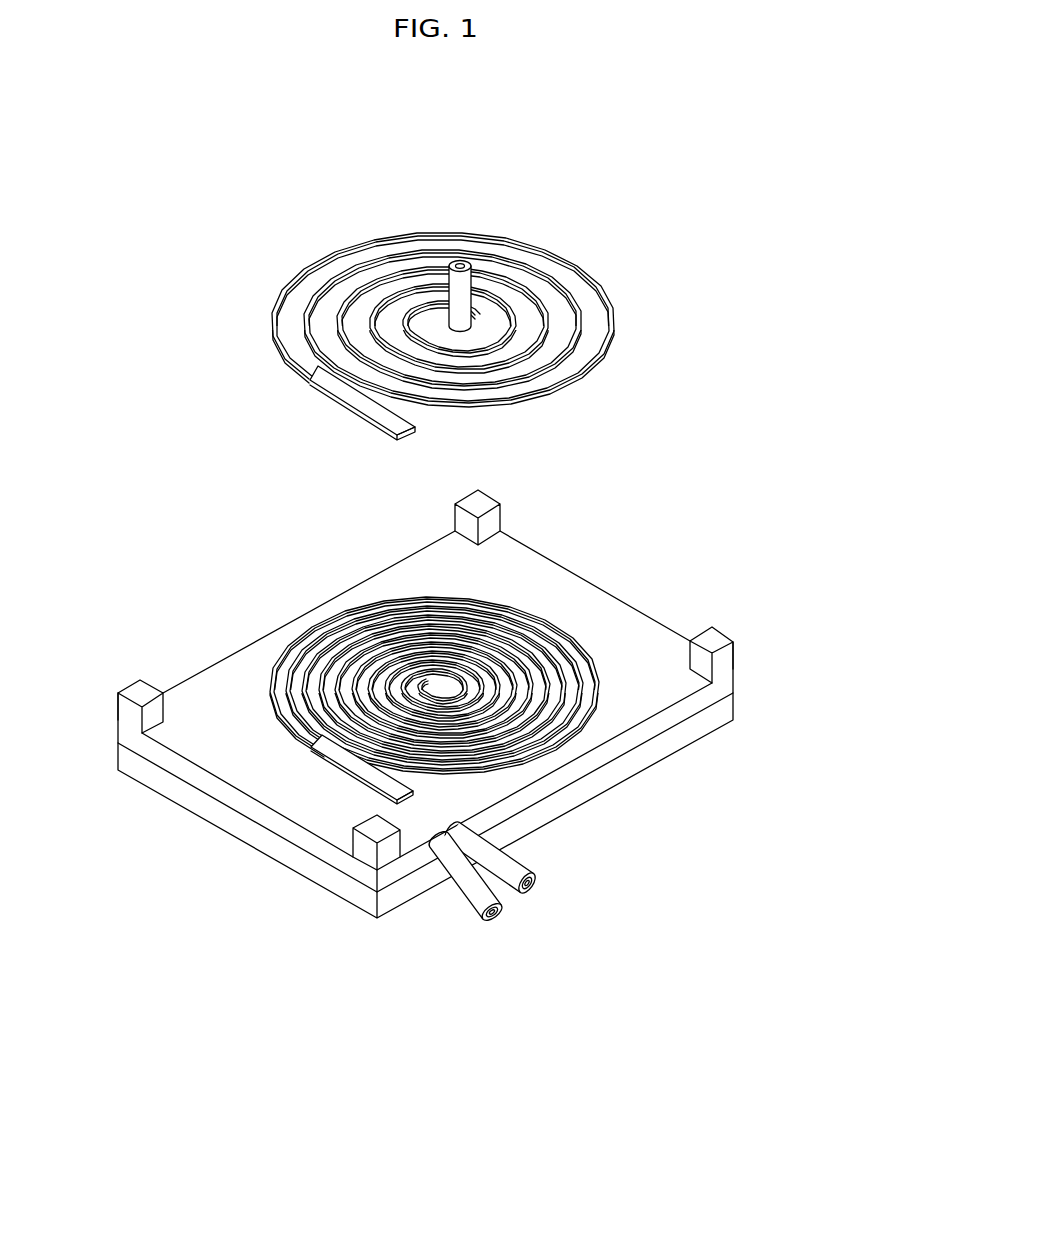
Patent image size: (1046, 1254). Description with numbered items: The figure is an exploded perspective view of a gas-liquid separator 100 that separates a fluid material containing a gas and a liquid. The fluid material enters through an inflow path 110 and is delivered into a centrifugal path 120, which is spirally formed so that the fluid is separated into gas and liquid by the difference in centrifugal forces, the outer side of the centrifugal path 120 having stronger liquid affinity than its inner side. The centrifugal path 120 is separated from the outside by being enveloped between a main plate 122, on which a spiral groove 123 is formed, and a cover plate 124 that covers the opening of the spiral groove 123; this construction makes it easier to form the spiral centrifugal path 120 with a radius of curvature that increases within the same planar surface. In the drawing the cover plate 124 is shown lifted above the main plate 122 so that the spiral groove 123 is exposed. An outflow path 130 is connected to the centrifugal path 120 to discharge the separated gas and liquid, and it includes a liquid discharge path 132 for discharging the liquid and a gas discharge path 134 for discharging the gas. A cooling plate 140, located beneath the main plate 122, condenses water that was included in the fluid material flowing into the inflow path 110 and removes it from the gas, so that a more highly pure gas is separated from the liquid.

The gas-liquid separator 100 is at (667, 154).
The inflow path 110 is at (467, 282).
The centrifugal path 120 is at (303, 743).
The main plate 122 is at (727, 678).
The spiral groove 123 is at (267, 697).
The cover plate 124 is at (597, 308).
The outflow path 130 is at (547, 1032).
The liquid discharge path 132 is at (475, 905).
The gas discharge path 134 is at (517, 890).
The cooling plate 140 is at (727, 711).